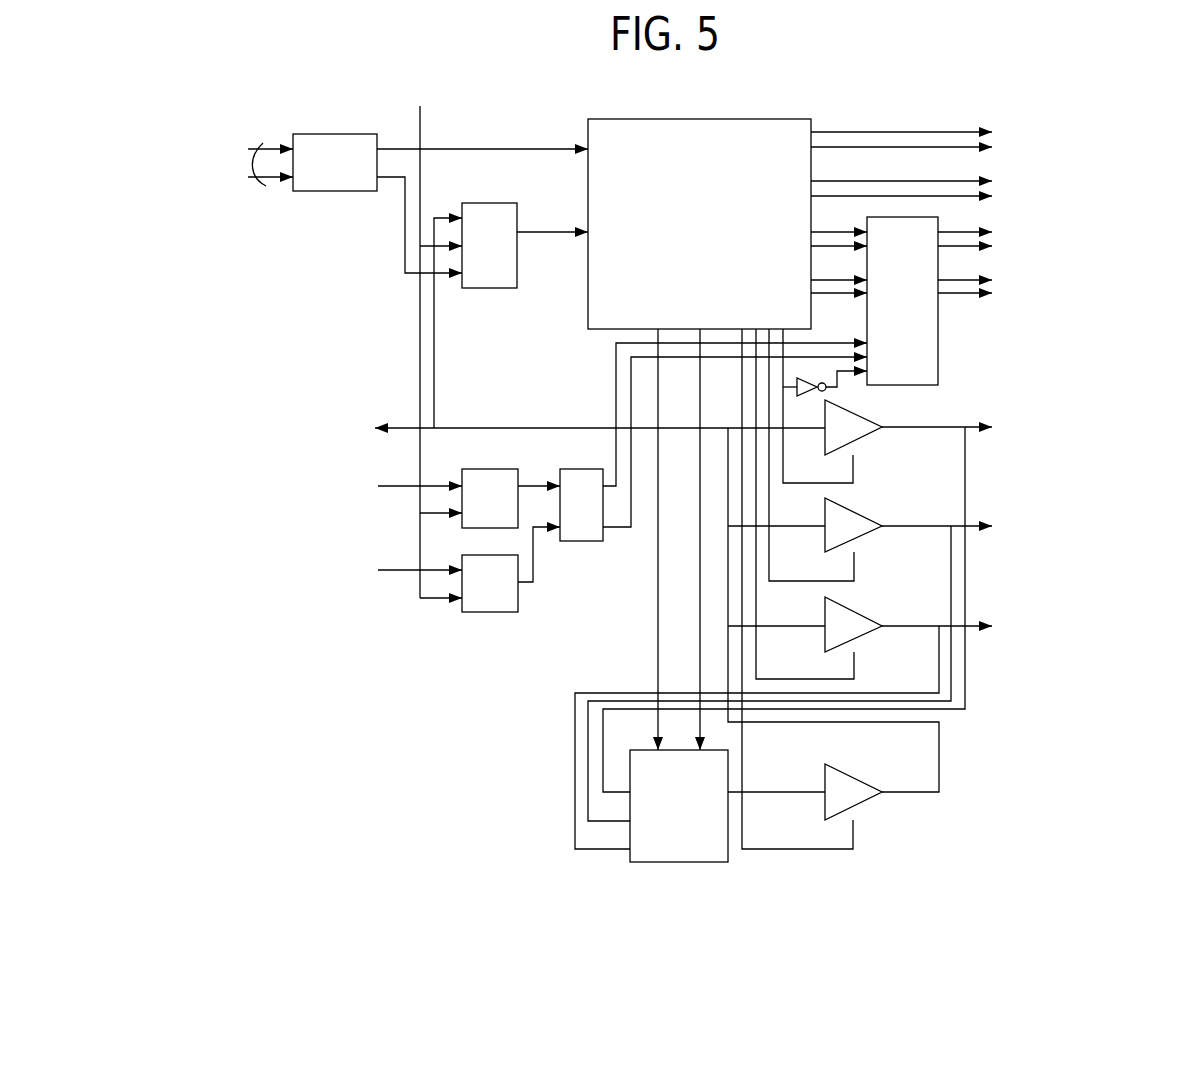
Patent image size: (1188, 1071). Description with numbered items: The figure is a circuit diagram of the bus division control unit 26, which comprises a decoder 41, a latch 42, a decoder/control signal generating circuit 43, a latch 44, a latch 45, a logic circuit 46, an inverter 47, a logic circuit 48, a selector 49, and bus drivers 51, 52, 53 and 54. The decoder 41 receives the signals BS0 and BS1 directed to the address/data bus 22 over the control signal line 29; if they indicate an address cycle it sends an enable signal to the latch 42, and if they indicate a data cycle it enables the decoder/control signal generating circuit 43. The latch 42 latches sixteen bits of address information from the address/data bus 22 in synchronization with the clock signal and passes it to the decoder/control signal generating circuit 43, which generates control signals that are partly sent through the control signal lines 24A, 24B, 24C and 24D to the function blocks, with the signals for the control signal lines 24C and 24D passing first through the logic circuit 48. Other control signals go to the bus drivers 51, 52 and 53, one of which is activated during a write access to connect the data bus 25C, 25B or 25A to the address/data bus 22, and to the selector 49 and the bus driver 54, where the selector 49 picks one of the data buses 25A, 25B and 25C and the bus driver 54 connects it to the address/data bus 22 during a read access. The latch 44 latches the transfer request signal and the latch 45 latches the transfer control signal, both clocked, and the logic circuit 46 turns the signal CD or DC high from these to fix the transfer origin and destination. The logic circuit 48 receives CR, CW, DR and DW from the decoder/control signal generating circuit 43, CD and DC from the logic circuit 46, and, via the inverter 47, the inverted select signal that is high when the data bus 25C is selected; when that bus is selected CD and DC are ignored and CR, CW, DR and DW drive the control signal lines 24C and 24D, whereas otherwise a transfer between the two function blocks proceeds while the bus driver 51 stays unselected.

The address/data bus 22 is at (507, 605).
The control signal line 24A is at (921, 140).
The control signal line 24B is at (920, 189).
The control signal line 24C is at (984, 239).
The control signal line 24D is at (985, 288).
The data bus 25A is at (857, 732).
The data bus 25B is at (864, 668).
The data bus 25C is at (871, 604).
The bus division control unit 26 is at (179, 111).
The control signal line 29 is at (265, 142).
The decoder 41 is at (337, 192).
The latch 42 is at (490, 289).
The decoder/control signal generating circuit 43 is at (628, 119).
The latch 44 is at (492, 469).
The latch 45 is at (470, 612).
The logic circuit 46 is at (590, 469).
The inverter 47 is at (803, 385).
The logic circuit 48 is at (903, 386).
The selector 49 is at (652, 862).
The bus driver 51 is at (850, 420).
The bus driver 52 is at (850, 518).
The bus driver 53 is at (850, 616).
The bus driver 54 is at (850, 782).